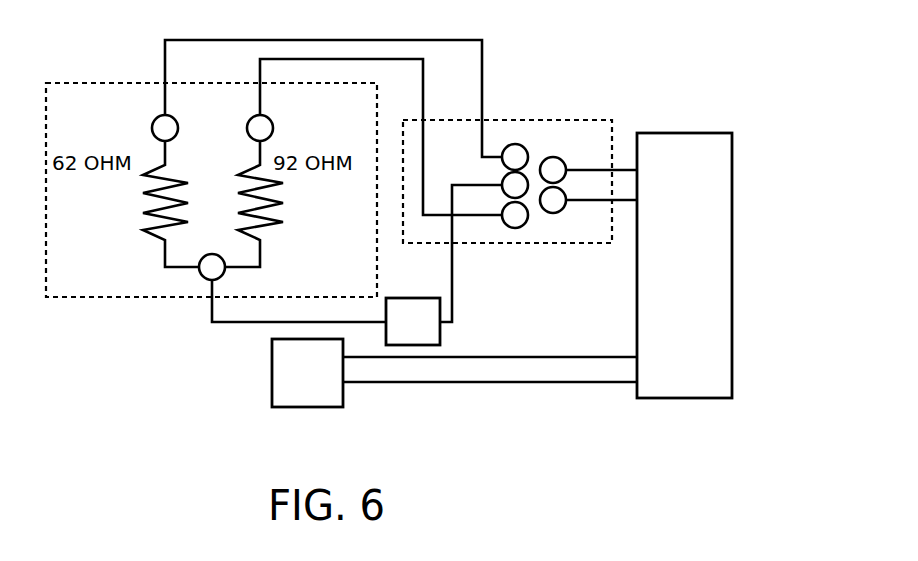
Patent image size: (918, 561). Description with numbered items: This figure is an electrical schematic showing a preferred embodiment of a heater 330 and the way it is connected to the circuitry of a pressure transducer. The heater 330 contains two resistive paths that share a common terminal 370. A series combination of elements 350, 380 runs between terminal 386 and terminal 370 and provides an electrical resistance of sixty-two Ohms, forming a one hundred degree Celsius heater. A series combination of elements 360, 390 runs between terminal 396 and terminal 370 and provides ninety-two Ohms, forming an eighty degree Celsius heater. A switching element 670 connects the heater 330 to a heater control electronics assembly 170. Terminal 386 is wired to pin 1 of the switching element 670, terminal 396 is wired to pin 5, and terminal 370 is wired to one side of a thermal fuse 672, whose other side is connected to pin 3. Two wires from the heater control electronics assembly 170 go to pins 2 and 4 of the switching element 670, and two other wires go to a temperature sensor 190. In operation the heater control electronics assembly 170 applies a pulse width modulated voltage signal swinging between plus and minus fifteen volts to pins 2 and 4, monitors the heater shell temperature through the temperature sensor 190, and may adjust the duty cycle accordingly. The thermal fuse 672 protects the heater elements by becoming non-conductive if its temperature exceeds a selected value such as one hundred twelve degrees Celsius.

The pin 1 is at (502, 160).
The pin 2 is at (562, 160).
The pin 3 is at (502, 190).
The pin 4 is at (562, 210).
The pin 5 is at (502, 218).
The heater control electronics assembly 170 is at (684, 265).
The temperature sensor 190 is at (307, 373).
The heater 330 is at (125, 299).
The heater element 350 is at (132, 214).
The heater element 380 is at (150, 253).
The heater element 360 is at (293, 216).
The heater element 390 is at (277, 248).
The terminal 370 is at (203, 277).
The terminal 386 is at (152, 128).
The terminal 396 is at (273, 128).
The switching element 670 is at (573, 120).
The thermal fuse 672 is at (413, 321).